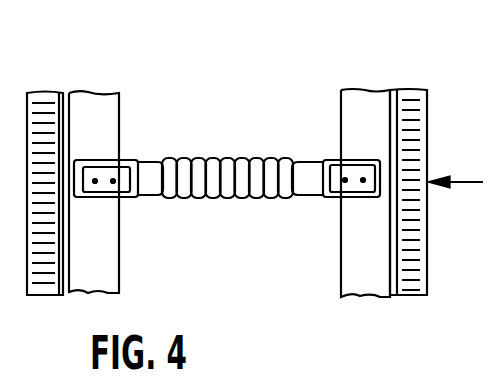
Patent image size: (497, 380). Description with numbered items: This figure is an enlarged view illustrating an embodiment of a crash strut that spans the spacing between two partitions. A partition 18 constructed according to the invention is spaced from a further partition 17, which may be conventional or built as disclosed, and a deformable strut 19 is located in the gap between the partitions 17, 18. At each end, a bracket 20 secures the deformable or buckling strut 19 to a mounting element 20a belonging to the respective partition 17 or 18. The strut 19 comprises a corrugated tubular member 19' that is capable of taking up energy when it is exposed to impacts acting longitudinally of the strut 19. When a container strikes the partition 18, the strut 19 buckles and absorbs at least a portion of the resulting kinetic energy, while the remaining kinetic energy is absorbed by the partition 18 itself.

The further partition 17 is at (53, 92).
The partition 18 is at (387, 85).
The deformable strut 19 is at (230, 118).
The corrugated tubular member 19' is at (227, 208).
The bracket 20 is at (123, 199).
The mounting element 20a is at (107, 124).